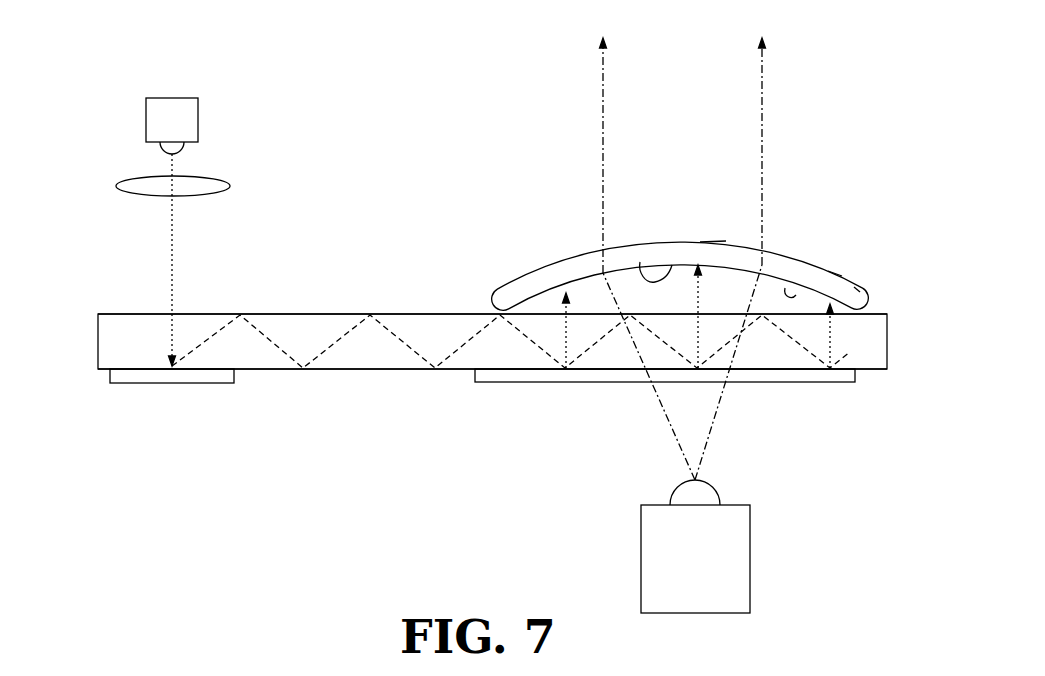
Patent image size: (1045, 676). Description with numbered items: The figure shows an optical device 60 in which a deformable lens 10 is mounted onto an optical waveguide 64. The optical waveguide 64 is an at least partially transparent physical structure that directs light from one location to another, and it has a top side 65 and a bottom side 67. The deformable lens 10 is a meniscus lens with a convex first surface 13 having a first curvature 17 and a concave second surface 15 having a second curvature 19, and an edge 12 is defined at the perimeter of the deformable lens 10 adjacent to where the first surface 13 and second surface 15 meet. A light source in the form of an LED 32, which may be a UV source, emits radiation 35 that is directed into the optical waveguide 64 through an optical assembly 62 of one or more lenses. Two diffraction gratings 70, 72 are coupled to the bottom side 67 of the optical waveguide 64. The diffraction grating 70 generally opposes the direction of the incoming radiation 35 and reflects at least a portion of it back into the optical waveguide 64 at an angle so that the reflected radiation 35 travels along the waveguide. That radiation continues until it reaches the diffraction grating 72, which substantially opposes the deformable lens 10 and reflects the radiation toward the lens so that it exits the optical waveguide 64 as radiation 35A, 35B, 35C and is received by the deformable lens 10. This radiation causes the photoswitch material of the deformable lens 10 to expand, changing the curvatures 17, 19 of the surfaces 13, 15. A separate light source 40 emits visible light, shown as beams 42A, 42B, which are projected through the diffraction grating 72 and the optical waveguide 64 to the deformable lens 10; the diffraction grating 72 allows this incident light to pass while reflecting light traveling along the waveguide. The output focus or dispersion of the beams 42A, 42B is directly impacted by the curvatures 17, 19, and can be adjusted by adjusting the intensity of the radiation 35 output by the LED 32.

The deformable lens 10 is at (806, 262).
The edge 12 is at (858, 288).
The first surface 13 is at (835, 273).
The second surface 15 is at (785, 288).
The first curvature 17 is at (713, 240).
The second curvature 19 is at (640, 262).
The LED 32 is at (172, 110).
The radiation 35 is at (174, 228).
The radiation 35A is at (562, 332).
The radiation 35B is at (699, 298).
The radiation 35C is at (830, 383).
The light source 40 is at (733, 552).
The beam 42A is at (676, 441).
The beam 42B is at (712, 430).
The optical device 60 is at (833, 76).
The optical assembly 62 is at (118, 188).
The optical waveguide 64 is at (101, 335).
The top side 65 is at (128, 314).
The bottom side 67 is at (408, 370).
The diffraction grating 70 is at (207, 383).
The diffraction grating 72 is at (548, 382).